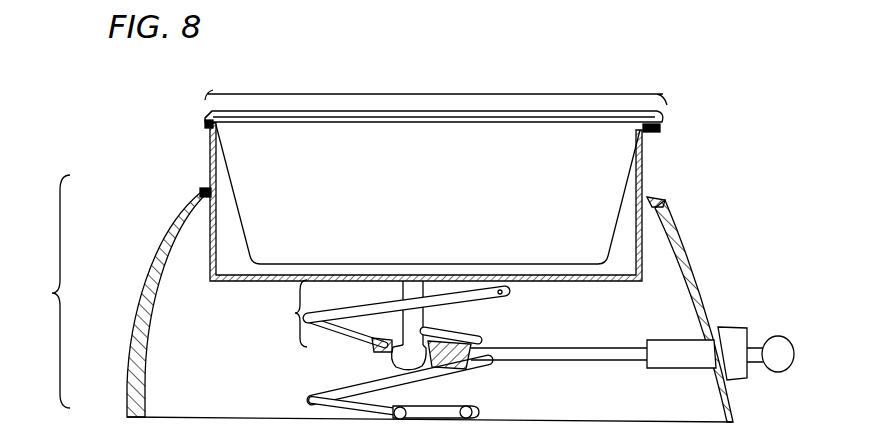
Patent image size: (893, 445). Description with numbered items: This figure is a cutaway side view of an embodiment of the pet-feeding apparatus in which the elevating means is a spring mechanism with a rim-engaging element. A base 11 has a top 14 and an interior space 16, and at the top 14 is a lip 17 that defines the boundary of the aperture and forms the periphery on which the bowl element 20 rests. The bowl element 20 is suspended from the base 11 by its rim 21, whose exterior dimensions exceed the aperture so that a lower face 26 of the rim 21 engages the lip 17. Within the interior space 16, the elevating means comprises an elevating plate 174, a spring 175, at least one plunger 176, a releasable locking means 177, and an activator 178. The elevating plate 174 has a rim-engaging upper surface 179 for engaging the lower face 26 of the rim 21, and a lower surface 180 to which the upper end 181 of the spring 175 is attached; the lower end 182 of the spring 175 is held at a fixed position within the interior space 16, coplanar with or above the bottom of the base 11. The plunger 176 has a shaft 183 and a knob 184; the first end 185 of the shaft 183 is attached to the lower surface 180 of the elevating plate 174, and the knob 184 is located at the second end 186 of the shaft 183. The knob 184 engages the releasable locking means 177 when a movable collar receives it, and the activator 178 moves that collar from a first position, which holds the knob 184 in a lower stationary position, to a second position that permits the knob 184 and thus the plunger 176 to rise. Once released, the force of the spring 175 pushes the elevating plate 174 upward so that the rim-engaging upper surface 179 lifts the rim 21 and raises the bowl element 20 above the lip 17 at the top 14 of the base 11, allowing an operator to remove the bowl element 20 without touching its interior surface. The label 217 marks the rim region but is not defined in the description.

The base 11 is at (46, 291).
The top 14 is at (183, 196).
The interior space 16 is at (236, 379).
The lip 17 is at (201, 192).
The bowl element 20 is at (420, 94).
The rim 21 is at (642, 114).
The lower face 26 is at (206, 122).
The elevating plate 174 is at (648, 266).
The spring 175 is at (512, 285).
The plunger 176 is at (312, 313).
The releasable locking means 177 is at (375, 357).
The activator 178 is at (561, 353).
The rim-engaging upper surface 179 is at (209, 128).
The lower surface 180 is at (565, 283).
The upper end 181 is at (483, 300).
The lower end 182 is at (470, 405).
The shaft 183 is at (418, 313).
The knob 184 is at (407, 356).
The first end 185 is at (395, 288).
The second end 186 is at (425, 336).
The rim left portion 217 is at (229, 108).